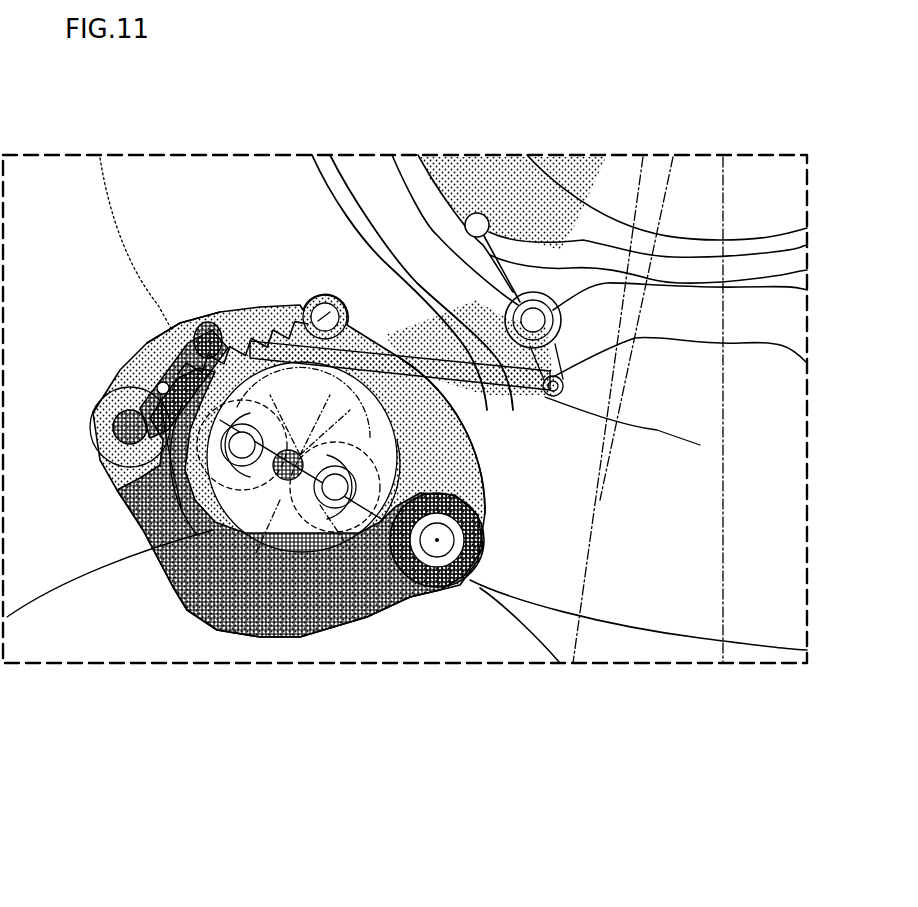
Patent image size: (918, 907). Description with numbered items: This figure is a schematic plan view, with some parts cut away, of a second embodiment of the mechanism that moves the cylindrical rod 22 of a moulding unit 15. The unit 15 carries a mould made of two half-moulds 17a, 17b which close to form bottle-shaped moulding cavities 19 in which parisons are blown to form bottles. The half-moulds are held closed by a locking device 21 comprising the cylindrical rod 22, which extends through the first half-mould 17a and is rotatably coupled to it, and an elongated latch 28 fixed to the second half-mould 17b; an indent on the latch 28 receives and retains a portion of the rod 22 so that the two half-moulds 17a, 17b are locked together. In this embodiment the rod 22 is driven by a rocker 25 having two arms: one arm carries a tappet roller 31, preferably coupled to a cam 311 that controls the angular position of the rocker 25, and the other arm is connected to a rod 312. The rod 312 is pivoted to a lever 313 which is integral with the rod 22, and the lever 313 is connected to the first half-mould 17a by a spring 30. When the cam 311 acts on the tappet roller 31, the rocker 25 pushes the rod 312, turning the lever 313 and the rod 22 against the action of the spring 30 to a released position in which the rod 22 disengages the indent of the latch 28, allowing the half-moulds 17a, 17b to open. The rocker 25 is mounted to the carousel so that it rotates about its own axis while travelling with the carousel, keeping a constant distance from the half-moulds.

The unit 15 is at (300, 645).
The half-mould 17a is at (458, 467).
The half-mould 17b is at (372, 590).
The moulding cavity 19 is at (240, 465).
The locking device 21 is at (117, 442).
The cylindrical rod 22 is at (130, 427).
The rocker 25 is at (535, 318).
The latch 28 is at (133, 425).
The spring 30 is at (265, 343).
The tappet roller 31 is at (470, 214).
The cam 311 is at (513, 184).
The rod 312 is at (370, 360).
The lever 313 is at (178, 368).